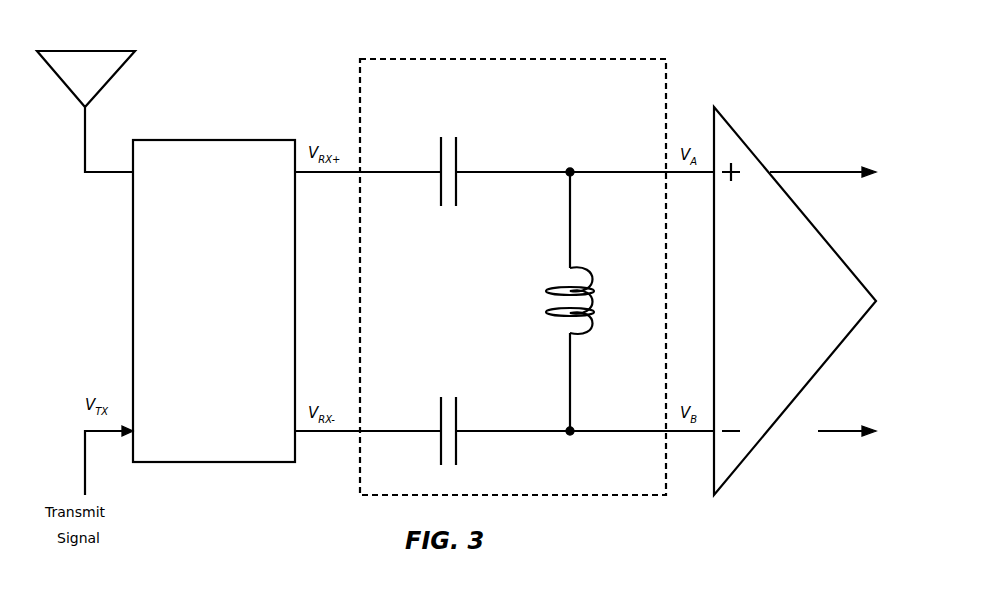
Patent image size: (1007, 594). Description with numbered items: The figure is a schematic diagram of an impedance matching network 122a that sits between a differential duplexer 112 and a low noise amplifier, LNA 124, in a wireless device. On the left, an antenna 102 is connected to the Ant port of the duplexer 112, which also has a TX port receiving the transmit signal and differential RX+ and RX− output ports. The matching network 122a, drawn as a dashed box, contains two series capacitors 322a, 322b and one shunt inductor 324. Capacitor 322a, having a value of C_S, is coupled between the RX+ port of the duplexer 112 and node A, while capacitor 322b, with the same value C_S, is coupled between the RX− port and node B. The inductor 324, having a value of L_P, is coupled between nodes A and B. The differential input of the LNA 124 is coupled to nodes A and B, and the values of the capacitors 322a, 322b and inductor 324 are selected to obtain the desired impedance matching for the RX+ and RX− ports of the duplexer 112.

The antenna 102 is at (84, 49).
The differential duplexer 112 is at (218, 129).
The impedance matching network 122a is at (509, 57).
The LNA 124 is at (820, 235).
The capacitor 322a is at (439, 197).
The capacitor 322b is at (438, 406).
The inductor 324 is at (560, 286).